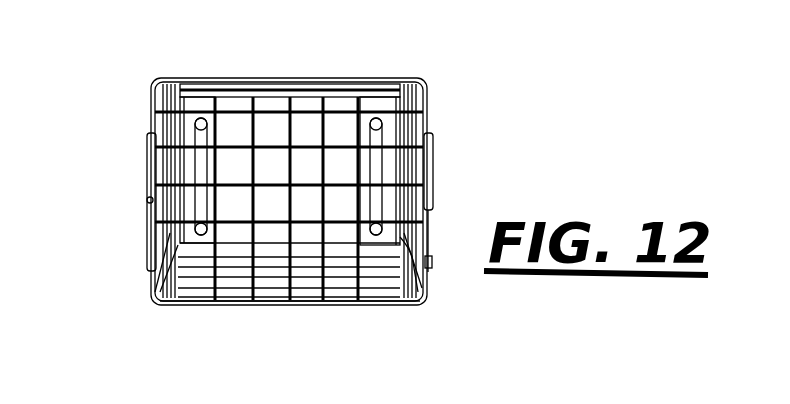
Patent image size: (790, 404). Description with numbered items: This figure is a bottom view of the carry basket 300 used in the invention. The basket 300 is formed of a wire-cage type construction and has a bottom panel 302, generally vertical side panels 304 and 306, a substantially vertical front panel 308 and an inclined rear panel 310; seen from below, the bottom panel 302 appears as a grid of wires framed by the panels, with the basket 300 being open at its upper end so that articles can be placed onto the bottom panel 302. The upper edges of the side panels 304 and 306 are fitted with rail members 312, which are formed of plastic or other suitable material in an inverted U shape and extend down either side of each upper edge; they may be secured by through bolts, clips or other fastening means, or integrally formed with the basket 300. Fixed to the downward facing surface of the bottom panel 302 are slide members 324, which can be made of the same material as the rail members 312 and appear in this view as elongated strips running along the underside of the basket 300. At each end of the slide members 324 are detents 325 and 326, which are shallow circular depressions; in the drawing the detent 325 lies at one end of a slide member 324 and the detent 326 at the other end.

The basket 300 is at (330, 60).
The bottom panel 302 is at (290, 242).
The side panel 304 is at (153, 120).
The side panel 306 is at (432, 118).
The front panel 308 is at (392, 80).
The rear panel 310 is at (207, 310).
The rail members 312 is at (150, 186).
The slide members 324 is at (192, 212).
The detent 325 is at (200, 119).
The detent 326 is at (380, 234).